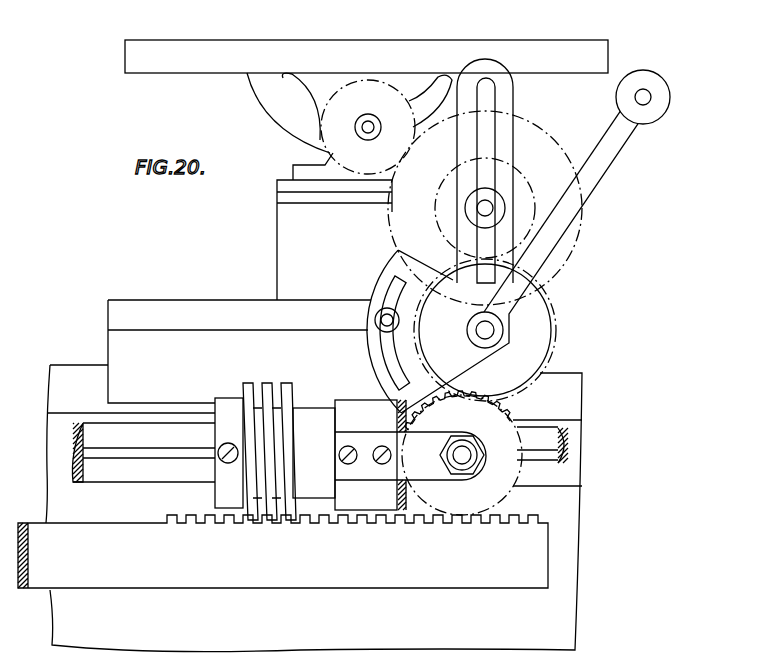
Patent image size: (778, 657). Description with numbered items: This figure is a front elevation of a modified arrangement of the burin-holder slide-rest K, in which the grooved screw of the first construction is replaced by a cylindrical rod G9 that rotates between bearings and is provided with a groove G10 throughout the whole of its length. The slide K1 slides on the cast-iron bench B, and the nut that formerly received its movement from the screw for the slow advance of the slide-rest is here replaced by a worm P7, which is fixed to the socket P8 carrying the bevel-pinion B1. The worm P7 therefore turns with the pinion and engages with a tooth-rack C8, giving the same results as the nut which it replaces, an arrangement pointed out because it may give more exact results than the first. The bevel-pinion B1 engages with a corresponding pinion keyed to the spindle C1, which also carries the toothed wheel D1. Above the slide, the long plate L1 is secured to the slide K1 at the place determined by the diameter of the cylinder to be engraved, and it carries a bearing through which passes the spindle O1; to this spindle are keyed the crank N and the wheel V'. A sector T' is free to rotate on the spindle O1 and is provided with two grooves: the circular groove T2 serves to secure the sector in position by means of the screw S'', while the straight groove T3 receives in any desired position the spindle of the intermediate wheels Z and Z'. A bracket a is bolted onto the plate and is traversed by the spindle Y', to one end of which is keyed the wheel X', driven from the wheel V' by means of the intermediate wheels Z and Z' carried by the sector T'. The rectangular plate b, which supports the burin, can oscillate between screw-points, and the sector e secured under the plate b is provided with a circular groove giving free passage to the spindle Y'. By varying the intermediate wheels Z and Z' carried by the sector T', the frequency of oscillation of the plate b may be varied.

The rectangular plate b is at (546, 37).
The sector e is at (349, 113).
The spindle Y' is at (368, 127).
The wheel X' is at (295, 161).
The straight groove T3 is at (488, 103).
The intermediate wheel Z' is at (485, 206).
The crank N is at (519, 262).
The intermediate wheel Z is at (605, 160).
The bracket a is at (334, 240).
The slide-rest K is at (239, 332).
The sector T' is at (394, 331).
The long plate L' is at (286, 320).
The screw S'' is at (367, 320).
The slide K1 is at (146, 376).
The circular groove T2 is at (380, 353).
The wheel V' is at (507, 330).
The spindle O1 is at (488, 337).
The cast-iron bench B is at (314, 508).
The groove G10 is at (90, 452).
The cylindrical rod G9 is at (113, 474).
The worm P7 is at (270, 508).
The socket P8 is at (289, 451).
The bevel-pinion B1 is at (397, 500).
The spindle C1 is at (462, 455).
The toothed wheel D1 is at (462, 453).
The tooth-rack C8 is at (283, 551).